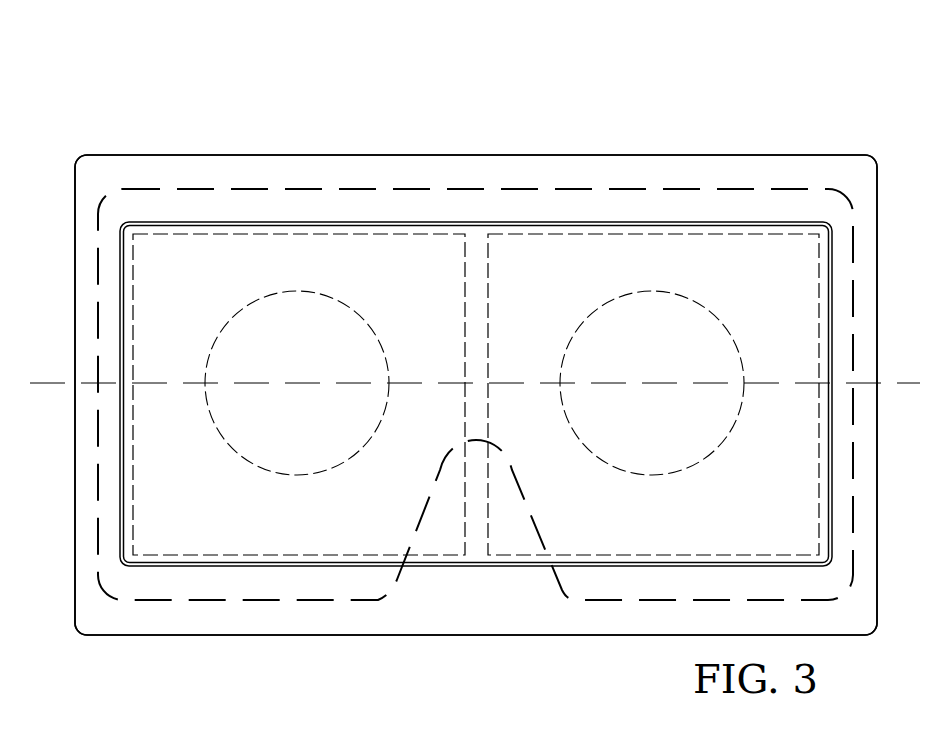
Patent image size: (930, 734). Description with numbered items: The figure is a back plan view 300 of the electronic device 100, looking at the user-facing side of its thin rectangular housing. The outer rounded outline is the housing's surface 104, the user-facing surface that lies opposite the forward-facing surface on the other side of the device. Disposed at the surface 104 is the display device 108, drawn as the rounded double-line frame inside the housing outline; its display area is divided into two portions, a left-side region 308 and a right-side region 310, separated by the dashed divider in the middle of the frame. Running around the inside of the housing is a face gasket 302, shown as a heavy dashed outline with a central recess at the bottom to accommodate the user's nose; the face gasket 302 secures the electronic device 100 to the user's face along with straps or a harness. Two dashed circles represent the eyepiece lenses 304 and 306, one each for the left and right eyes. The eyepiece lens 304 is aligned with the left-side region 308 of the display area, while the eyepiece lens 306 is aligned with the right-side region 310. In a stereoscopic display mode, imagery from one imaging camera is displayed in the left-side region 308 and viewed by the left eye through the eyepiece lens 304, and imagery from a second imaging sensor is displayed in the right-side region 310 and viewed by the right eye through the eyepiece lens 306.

The electronic device 100 is at (653, 146).
The surface 104 is at (138, 622).
The display device 108 is at (440, 213).
The back plan view 300 is at (217, 126).
The face gasket 302 is at (268, 602).
The eyepiece lens 304 is at (258, 300).
The eyepiece lens 306 is at (682, 297).
The left-side region 308 is at (432, 545).
The right-side region 310 is at (518, 545).